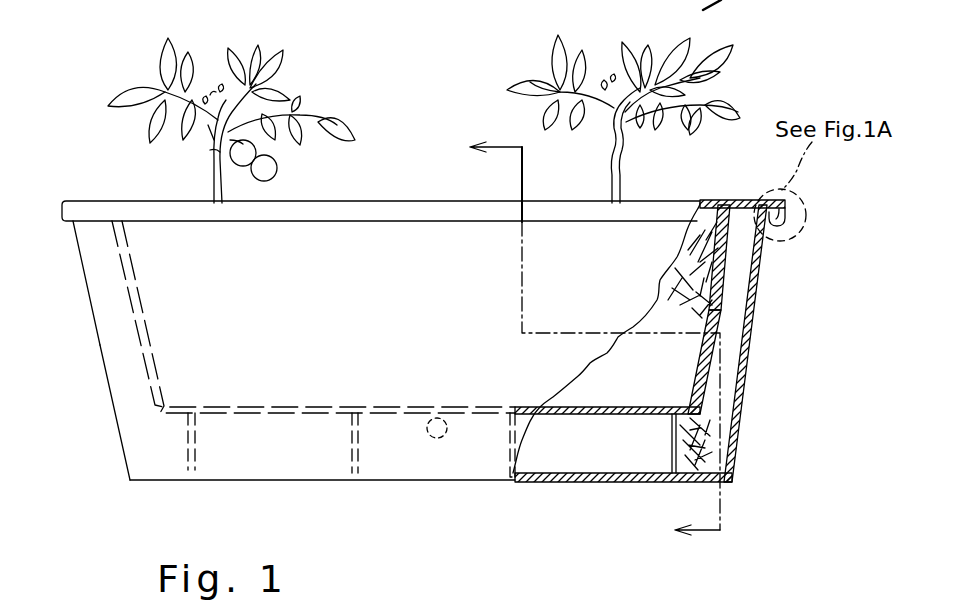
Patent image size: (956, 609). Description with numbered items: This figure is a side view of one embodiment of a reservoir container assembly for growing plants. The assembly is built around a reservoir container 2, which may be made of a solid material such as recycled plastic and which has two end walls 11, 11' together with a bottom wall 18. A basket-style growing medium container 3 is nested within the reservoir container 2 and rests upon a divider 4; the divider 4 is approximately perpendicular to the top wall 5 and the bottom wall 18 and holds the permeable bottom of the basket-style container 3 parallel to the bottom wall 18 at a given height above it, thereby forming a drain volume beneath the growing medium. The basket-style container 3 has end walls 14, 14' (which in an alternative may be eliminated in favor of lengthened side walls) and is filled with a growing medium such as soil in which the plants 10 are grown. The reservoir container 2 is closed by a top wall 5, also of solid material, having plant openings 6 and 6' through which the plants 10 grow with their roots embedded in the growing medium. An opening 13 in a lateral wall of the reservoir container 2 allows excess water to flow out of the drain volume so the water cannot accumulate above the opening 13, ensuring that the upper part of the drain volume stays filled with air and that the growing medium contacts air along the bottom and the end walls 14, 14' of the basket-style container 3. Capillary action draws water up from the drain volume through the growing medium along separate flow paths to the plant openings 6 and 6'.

The reservoir container 2 is at (95, 265).
The basket-style growing medium container 3 is at (718, 266).
The divider 4 is at (658, 455).
The top wall 5 is at (437, 211).
The plant opening 6 is at (623, 119).
The plant opening 6' is at (248, 143).
The plant 10 is at (292, 52).
The end wall 11 is at (82, 412).
The end wall 11' is at (769, 343).
The opening 13 is at (437, 440).
The end wall 14 is at (657, 362).
The end wall 14' is at (275, 349).
The bottom wall 18 is at (153, 480).